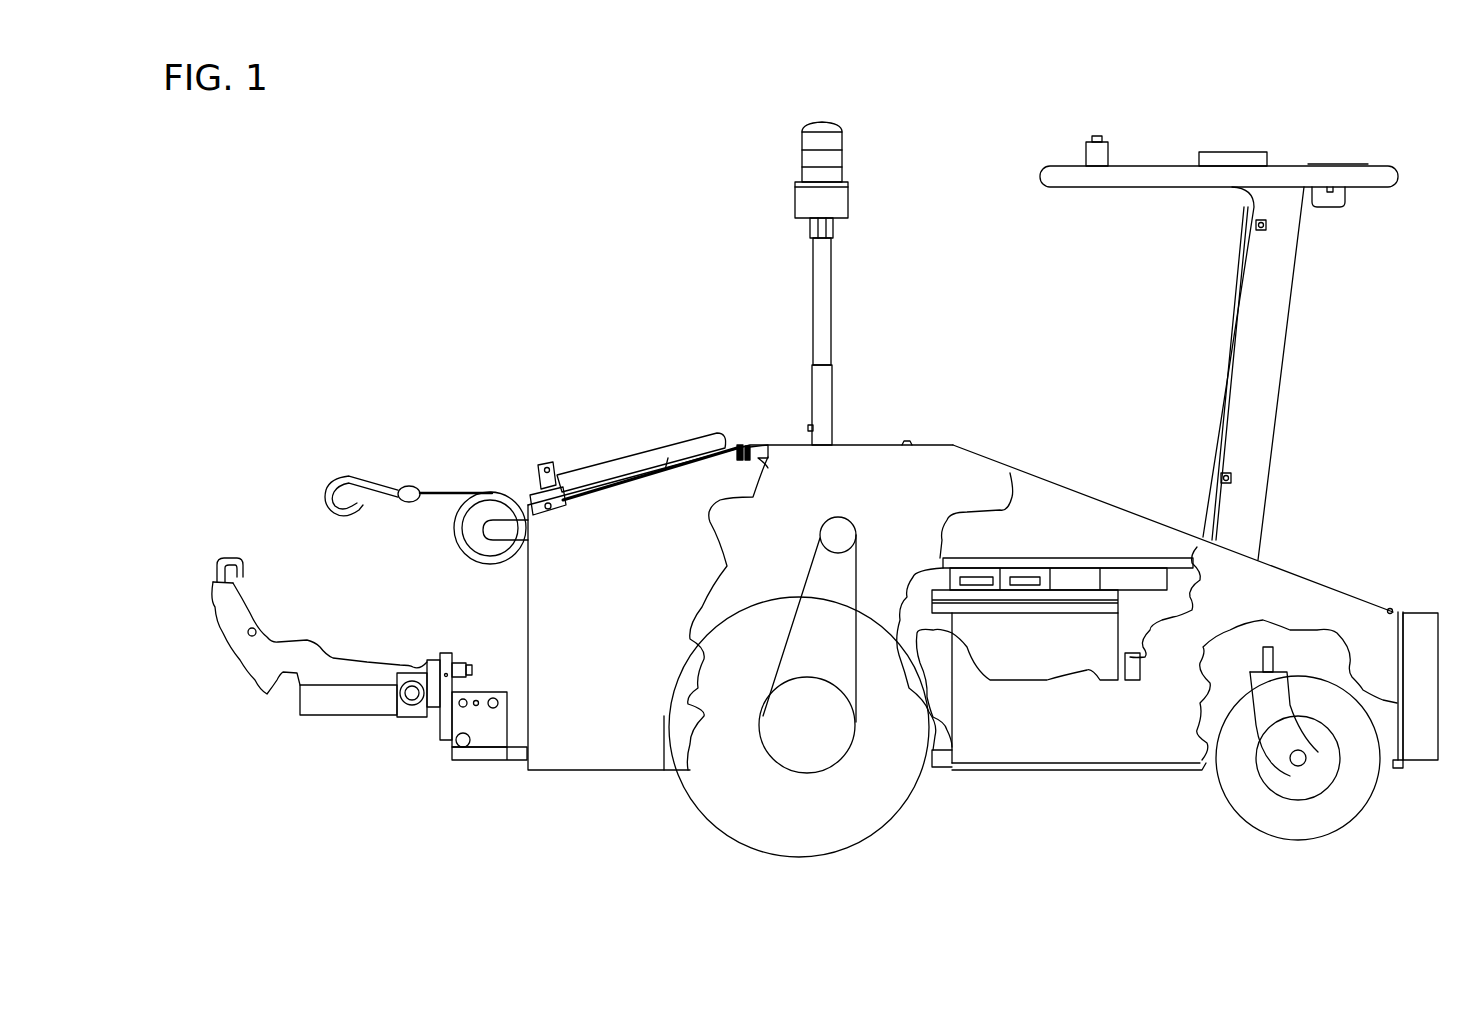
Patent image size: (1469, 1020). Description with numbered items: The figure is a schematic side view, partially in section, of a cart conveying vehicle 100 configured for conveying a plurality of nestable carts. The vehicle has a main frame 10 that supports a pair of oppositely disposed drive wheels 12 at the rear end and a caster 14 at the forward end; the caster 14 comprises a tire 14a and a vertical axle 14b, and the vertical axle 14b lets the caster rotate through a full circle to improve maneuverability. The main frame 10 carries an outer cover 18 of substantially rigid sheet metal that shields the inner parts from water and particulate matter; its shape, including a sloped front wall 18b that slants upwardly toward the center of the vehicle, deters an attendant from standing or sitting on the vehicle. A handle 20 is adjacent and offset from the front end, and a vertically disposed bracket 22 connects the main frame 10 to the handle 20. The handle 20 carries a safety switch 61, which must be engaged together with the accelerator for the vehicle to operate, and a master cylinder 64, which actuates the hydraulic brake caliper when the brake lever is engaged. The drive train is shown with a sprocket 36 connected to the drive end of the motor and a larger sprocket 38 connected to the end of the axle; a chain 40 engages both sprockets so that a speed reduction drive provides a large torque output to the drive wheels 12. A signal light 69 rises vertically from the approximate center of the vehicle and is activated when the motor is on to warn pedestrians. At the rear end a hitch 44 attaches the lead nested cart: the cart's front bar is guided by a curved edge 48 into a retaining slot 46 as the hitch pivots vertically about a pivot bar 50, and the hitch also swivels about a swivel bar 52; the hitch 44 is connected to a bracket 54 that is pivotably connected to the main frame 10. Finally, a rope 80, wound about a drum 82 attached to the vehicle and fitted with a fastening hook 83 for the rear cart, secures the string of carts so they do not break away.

The cart conveying vehicle 100 is at (528, 395).
The main frame 10 is at (1180, 772).
The drive wheels 12 is at (712, 820).
The caster 14 is at (1327, 788).
The tire 14a is at (1317, 840).
The vertical axle 14b is at (1265, 657).
The outer cover 18 is at (1295, 590).
The sloped front wall 18b is at (1362, 590).
The handle 20 is at (1398, 166).
The bracket 22 is at (1285, 345).
The sprocket 36 is at (845, 520).
The larger sprocket 38 is at (845, 770).
The chain 40 is at (780, 645).
The hitch 44 is at (267, 638).
The retaining slot 46 is at (278, 680).
The curved edge 48 is at (236, 629).
The pivot bar 50 is at (410, 703).
The swivel bar 52 is at (472, 665).
The bracket 54 is at (502, 762).
The safety switch 61 is at (1236, 150).
The master cylinder 64 is at (1108, 141).
The signal light 69 is at (850, 190).
The rope 80 is at (440, 490).
The drum 82 is at (460, 542).
The fastening hook 83 is at (330, 475).